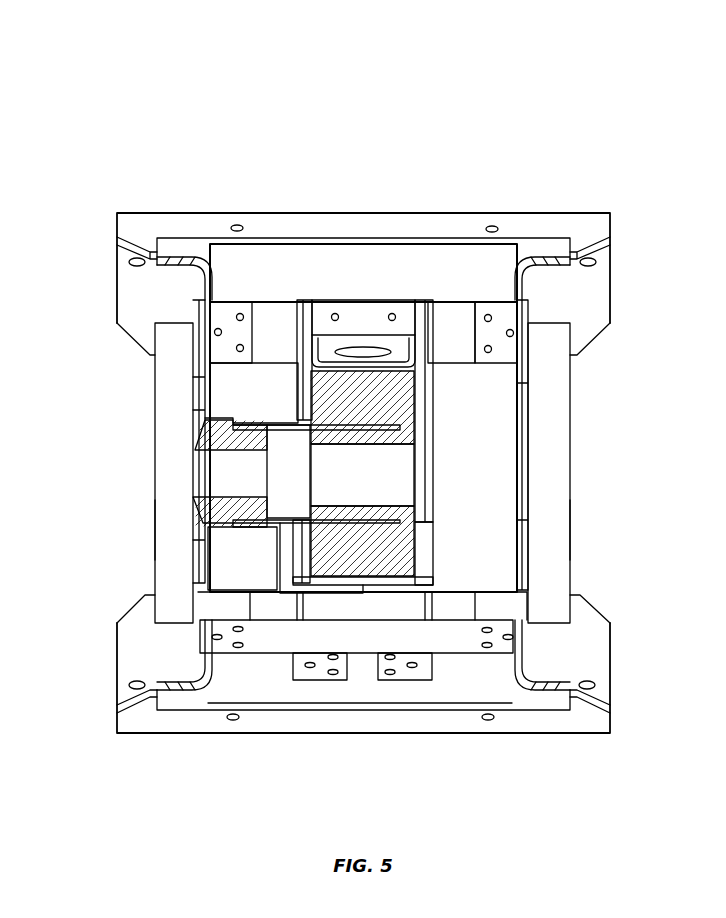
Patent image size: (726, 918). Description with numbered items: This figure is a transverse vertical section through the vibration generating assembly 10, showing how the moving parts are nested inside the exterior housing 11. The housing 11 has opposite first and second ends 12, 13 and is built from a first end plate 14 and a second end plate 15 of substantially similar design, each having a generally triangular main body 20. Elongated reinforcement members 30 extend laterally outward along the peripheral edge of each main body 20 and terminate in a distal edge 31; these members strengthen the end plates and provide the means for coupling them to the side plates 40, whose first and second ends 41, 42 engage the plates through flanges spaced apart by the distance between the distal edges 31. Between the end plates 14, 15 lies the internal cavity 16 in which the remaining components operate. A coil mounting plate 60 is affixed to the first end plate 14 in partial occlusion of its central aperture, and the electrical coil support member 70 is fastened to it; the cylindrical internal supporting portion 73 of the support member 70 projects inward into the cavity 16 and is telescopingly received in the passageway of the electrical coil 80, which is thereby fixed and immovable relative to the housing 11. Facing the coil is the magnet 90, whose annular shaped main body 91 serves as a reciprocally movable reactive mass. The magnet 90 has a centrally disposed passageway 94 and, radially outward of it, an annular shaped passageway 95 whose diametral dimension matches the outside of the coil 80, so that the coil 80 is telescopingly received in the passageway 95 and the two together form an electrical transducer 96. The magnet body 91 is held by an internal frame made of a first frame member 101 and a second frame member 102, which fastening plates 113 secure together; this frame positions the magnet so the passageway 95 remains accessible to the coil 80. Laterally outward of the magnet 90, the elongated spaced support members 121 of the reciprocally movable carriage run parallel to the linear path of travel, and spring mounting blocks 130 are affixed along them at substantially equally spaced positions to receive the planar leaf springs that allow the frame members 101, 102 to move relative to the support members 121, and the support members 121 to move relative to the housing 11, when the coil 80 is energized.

The vibration generating assembly 10 is at (583, 102).
The exterior housing 11 is at (512, 220).
The first end 12 is at (117, 282).
The second end 13 is at (612, 258).
The first end plate 14 is at (205, 298).
The second end plate 15 is at (520, 660).
The internal cavity 16 is at (495, 408).
The main body 20 is at (525, 437).
The reinforcement member 30 is at (173, 450).
The distal edge 31 is at (157, 533).
The side plate 40 is at (345, 213).
The first end 41 is at (126, 222).
The second end 42 is at (600, 302).
The coil mounting plate 60 is at (208, 385).
The electrical coil support member 70 is at (223, 522).
The internal supporting portion 73 is at (258, 508).
The electrical coil 80 is at (316, 474).
The magnet 90 is at (390, 547).
The annular shaped main body 91 is at (375, 363).
The centrally disposed passageway 94 is at (400, 487).
The annular shaped passageway 95 is at (397, 437).
The electrical transducer 96 is at (320, 597).
The first frame member 101 is at (303, 353).
The second frame member 102 is at (423, 550).
The fastening plate 113 is at (358, 315).
The support member 121 is at (453, 317).
The spring mounting block 130 is at (405, 672).